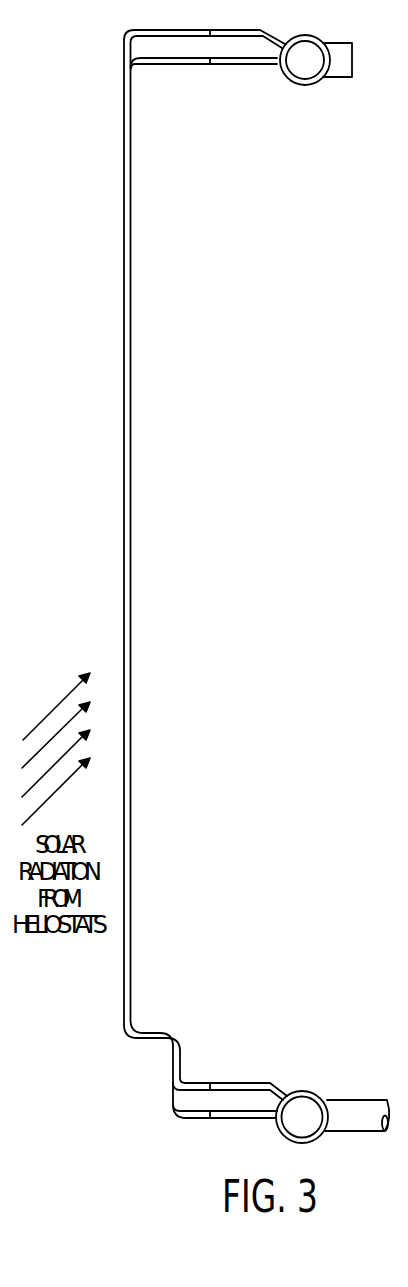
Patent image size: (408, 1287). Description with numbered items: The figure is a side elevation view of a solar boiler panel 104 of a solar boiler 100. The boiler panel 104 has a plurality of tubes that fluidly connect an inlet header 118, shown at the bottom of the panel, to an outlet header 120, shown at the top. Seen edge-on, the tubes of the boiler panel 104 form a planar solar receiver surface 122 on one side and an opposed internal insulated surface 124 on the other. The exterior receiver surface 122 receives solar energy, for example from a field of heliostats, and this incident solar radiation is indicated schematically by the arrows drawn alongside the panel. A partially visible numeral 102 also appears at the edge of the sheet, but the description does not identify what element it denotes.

The solar boiler 100 is at (236, 586).
The receiver support structure 102 is at (402, 520).
The solar boiler panel 104 is at (185, 574).
The inlet header 118 is at (302, 1091).
The outlet header 120 is at (303, 86).
The planar solar receiver surface 122 is at (124, 485).
The internal insulated surface 124 is at (131, 513).